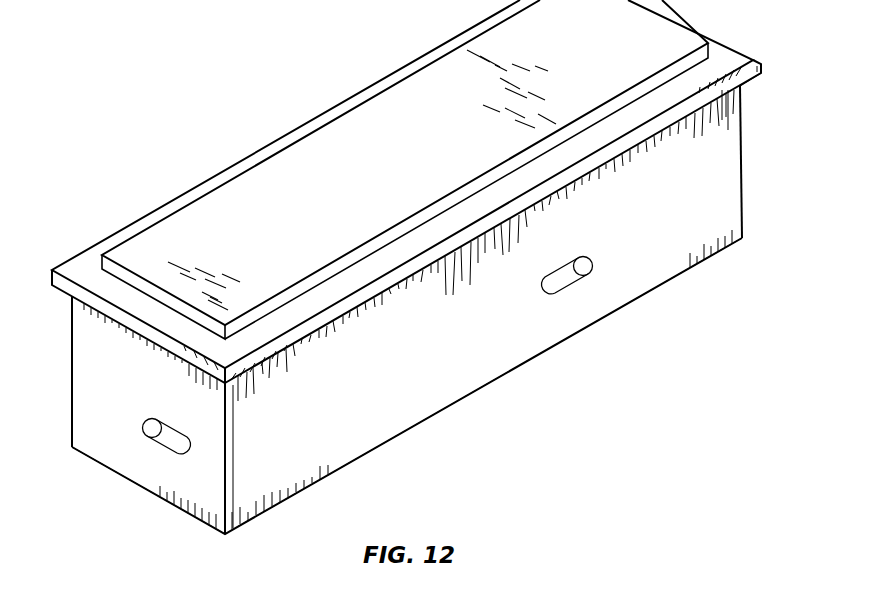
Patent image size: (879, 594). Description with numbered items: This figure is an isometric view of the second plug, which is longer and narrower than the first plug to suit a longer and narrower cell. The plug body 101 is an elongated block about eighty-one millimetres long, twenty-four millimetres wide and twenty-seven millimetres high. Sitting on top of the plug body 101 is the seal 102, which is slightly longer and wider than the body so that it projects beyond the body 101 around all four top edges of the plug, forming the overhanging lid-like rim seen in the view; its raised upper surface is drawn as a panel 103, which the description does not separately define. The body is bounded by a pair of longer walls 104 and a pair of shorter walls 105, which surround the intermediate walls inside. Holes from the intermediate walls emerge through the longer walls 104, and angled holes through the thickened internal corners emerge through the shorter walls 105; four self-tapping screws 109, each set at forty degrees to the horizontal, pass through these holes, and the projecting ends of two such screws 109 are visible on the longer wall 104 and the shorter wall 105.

The plug body 101 is at (742, 162).
The seal 102 is at (747, 52).
The raised top panel 103 is at (368, 143).
The longer walls 104 is at (465, 340).
The shorter walls 105 is at (113, 393).
The self-tapping screws 109 is at (146, 430).